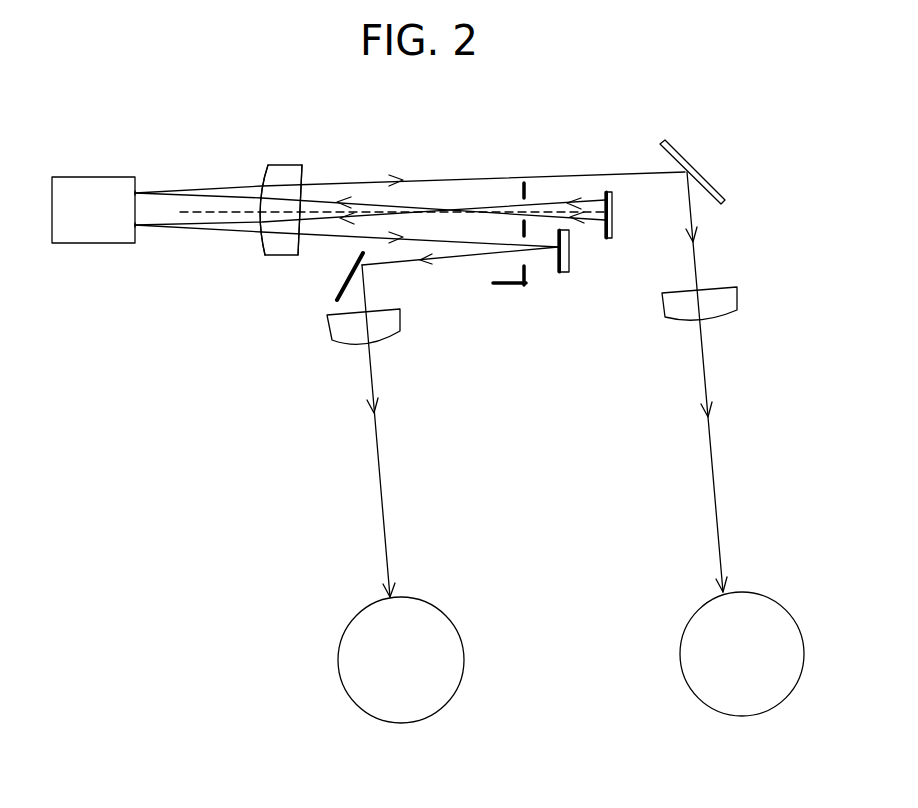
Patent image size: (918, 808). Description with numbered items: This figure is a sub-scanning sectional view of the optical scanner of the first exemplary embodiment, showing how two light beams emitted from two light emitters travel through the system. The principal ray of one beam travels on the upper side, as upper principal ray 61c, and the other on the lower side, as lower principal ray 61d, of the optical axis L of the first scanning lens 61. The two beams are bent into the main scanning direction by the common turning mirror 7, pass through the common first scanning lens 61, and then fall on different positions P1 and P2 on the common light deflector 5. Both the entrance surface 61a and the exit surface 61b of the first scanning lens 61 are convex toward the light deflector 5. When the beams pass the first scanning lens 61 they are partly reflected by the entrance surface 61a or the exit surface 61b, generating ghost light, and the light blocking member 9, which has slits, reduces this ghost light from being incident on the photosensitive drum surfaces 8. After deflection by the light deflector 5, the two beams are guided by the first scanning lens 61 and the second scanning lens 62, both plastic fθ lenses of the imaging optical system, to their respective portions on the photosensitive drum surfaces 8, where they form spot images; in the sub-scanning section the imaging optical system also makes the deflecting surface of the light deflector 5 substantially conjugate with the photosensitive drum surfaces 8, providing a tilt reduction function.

The light deflector 5 is at (72, 185).
The position on light deflector P1 is at (142, 186).
The position on light deflector P2 is at (140, 234).
The optical axis of the first scanning lens L is at (225, 210).
The first scanning lens 61 is at (285, 172).
The entrance surface 61a is at (260, 247).
The exit surface 61b is at (307, 248).
The upper principal ray 61c is at (198, 195).
The lower principal ray 61d is at (208, 227).
The light blocking member 9 is at (520, 183).
The turning mirror 7 is at (604, 200).
The second scanning lens 62 is at (333, 340).
The photosensitive drum surface 8 is at (433, 612).